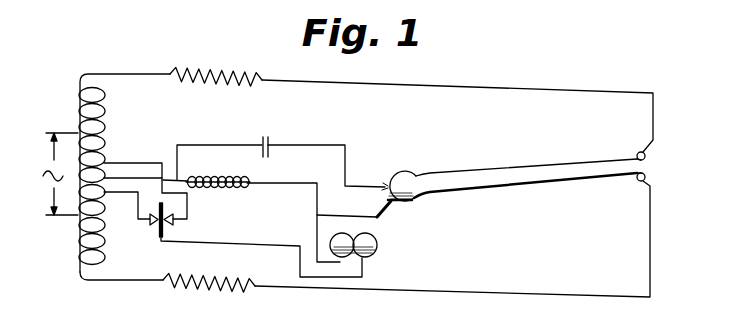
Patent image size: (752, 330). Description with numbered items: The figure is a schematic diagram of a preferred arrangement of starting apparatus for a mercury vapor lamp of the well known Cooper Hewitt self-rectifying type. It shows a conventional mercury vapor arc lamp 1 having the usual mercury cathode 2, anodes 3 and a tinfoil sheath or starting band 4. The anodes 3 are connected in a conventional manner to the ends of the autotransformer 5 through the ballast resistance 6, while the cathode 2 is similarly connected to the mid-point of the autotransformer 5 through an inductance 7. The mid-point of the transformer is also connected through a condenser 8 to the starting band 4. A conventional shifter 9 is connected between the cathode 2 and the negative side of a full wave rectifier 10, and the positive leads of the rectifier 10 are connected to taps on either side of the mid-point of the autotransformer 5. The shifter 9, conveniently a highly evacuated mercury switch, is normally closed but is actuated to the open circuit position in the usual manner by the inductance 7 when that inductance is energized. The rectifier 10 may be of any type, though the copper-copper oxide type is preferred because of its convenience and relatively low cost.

The mercury vapor arc lamp 1 is at (548, 176).
The mercury cathode 2 is at (404, 190).
The anodes 3 is at (647, 176).
The starting band 4 is at (410, 203).
The autotransformer 5 is at (101, 128).
The ballast resistance 6 is at (198, 72).
The inductance 7 is at (224, 188).
The condenser 8 is at (270, 137).
The shifter 9 is at (376, 240).
The full wave rectifier 10 is at (165, 232).